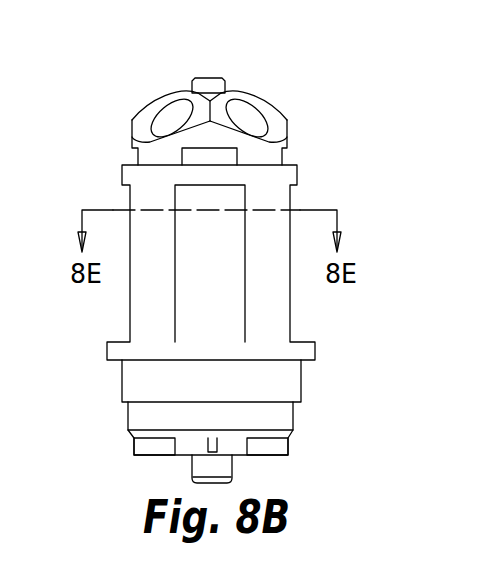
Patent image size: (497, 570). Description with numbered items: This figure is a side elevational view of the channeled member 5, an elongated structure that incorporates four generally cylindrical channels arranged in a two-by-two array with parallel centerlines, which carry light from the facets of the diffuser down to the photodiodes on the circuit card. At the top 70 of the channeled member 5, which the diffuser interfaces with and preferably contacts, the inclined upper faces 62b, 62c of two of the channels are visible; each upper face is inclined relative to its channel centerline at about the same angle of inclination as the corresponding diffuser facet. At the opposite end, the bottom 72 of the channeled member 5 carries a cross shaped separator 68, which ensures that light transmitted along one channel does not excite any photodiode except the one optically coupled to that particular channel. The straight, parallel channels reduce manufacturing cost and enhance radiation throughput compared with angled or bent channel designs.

The channeled member 5 is at (93, 133).
The top of channeled member 70 is at (232, 88).
The upper face of channel 60b 62b is at (148, 118).
The upper face of channel 60c 62c is at (277, 118).
The bottom of channeled member 72 is at (152, 440).
The cross shaped separator 68 is at (267, 445).